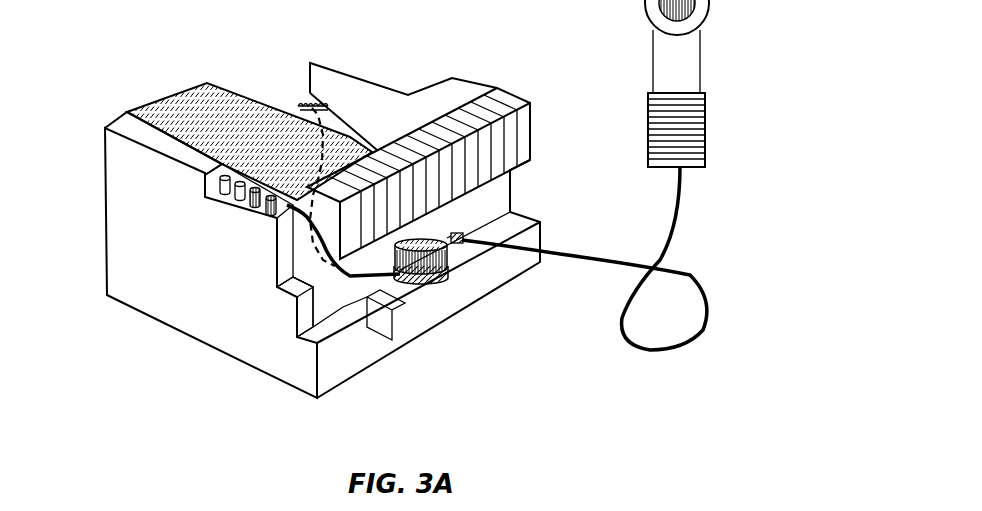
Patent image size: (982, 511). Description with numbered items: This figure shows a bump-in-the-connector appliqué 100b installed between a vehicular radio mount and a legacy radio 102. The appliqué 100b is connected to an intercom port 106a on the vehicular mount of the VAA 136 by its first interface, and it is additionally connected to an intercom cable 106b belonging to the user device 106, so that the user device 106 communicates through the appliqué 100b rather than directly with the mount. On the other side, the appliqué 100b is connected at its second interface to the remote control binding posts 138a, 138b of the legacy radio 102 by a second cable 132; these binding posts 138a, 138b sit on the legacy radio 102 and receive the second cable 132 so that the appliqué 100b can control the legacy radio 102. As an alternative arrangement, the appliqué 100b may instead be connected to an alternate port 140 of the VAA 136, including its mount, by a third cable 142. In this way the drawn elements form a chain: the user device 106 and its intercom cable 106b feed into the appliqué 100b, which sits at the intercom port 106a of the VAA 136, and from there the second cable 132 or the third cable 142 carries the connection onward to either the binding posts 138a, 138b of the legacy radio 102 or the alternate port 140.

The legacy radio 102 is at (210, 107).
The alternate port 140 is at (288, 104).
The third cable 142 is at (365, 130).
The user device 106 is at (650, 103).
The VAA 136 is at (107, 217).
The remote control binding post 138b is at (240, 200).
The remote control binding post 138a is at (272, 214).
The second cable 132 is at (350, 250).
The intercom cable 106b is at (465, 236).
The bump-in-the-connector appliqué 100b is at (470, 282).
The intercom port 106a is at (417, 280).